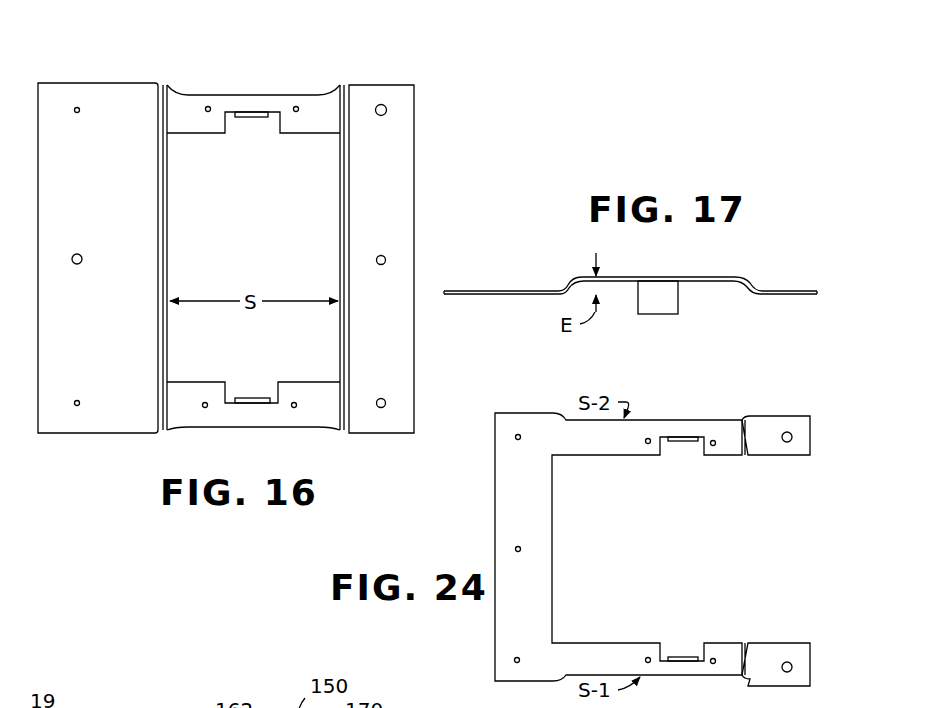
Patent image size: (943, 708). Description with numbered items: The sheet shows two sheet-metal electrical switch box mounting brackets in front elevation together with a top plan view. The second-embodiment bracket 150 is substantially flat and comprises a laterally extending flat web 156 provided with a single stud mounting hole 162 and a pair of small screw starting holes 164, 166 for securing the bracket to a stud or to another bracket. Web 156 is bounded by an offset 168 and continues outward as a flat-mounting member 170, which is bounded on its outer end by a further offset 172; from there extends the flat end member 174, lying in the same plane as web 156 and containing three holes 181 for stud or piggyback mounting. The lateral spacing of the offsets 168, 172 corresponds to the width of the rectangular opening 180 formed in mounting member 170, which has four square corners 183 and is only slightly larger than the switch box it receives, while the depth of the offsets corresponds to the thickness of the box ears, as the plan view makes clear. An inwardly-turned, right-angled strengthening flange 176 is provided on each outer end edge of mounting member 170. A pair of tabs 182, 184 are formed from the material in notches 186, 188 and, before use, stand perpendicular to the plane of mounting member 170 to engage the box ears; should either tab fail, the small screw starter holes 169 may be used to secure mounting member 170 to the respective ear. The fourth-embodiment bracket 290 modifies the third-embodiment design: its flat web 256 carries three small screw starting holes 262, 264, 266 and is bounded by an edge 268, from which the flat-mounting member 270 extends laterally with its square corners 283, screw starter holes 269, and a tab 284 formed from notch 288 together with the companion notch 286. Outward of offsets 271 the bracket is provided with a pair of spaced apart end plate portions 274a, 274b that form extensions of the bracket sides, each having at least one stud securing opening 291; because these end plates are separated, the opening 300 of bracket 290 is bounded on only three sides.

In FIG. 16, the electrical switch box mounting bracket 150 is at (243, 78).
In FIG. 17, the electrical switch box mounting bracket 150 is at (672, 275).
In FIG. 16, the flat web 156 is at (120, 97).
In FIG. 17, the flat web 156 is at (503, 296).
In FIG. 16, the stud mounting hole 162 is at (82, 257).
In FIG. 16, the screw starting hole 164 is at (78, 113).
In FIG. 16, the screw starting hole 166 is at (77, 400).
In FIG. 16, the offset 168 is at (168, 243).
In FIG. 17, the offset 168 is at (565, 293).
In FIG. 16, the screw starter holes 169 is at (206, 97).
In FIG. 16, the flat-mounting member 170 is at (310, 97).
In FIG. 16, the offset 172 is at (345, 232).
In FIG. 17, the offset 172 is at (752, 297).
In FIG. 16, the flat end member 174 is at (405, 145).
In FIG. 17, the strengthening flange 176 is at (722, 278).
In FIG. 16, the opening 180 is at (190, 148).
In FIG. 16, the holes 181 is at (381, 104).
In FIG. 16, the tab 182 is at (265, 117).
In FIG. 17, the tab 182 is at (657, 305).
In FIG. 16, the square corners 183 is at (168, 360).
In FIG. 16, the tab 184 is at (262, 400).
In FIG. 16, the notch 186 is at (227, 128).
In FIG. 16, the notch 188 is at (228, 395).
In FIG. 24, the flat web 256 is at (500, 428).
In FIG. 24, the screw starting hole 262 is at (521, 549).
In FIG. 24, the screw starting hole 264 is at (515, 440).
In FIG. 24, the screw starting hole 266 is at (514, 660).
In FIG. 24, the edge 268 is at (552, 519).
In FIG. 24, the screw starter holes 269 is at (645, 443).
In FIG. 24, the flat-mounting member 270 is at (725, 433).
In FIG. 24, the offset 271 is at (742, 448).
In FIG. 24, the end plate portion 274a is at (788, 412).
In FIG. 24, the end plate portion 274b is at (765, 676).
In FIG. 24, the square corners 283 is at (555, 616).
In FIG. 24, the tab 284 is at (690, 655).
In FIG. 24, the notch 286 is at (660, 446).
In FIG. 24, the notch 288 is at (673, 637).
In FIG. 24, the bracket 290 is at (483, 534).
In FIG. 24, the stud securing opening 291 is at (787, 444).
In FIG. 24, the opening 300 is at (615, 585).